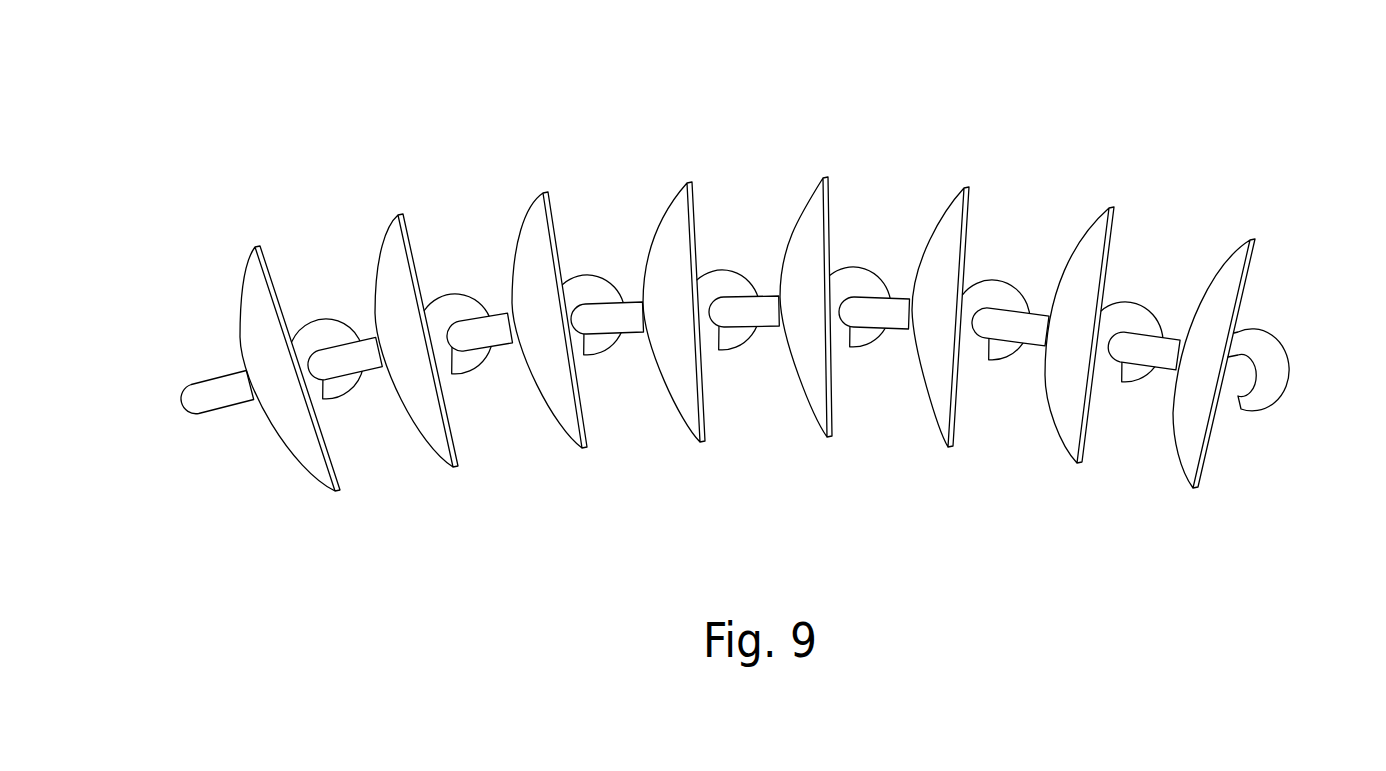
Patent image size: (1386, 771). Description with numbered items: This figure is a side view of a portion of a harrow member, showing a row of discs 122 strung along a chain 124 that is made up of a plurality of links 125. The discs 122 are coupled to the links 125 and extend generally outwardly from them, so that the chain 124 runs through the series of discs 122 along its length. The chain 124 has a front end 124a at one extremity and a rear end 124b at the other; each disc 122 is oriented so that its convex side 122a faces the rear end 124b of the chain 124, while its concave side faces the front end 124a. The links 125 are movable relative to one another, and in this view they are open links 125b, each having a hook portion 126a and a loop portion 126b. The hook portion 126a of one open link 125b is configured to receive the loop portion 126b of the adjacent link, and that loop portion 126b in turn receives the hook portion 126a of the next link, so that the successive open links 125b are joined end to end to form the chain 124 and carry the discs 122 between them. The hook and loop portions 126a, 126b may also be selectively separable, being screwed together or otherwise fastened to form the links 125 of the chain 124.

The disc 122 is at (657, 202).
The convex side 122a is at (530, 227).
The chain 124 is at (747, 257).
The front end 124a is at (182, 373).
The rear end 124b is at (1283, 413).
The link 125 is at (1008, 267).
The open link 125b is at (483, 378).
The hook portion 126a is at (1135, 315).
The loop portion 126b is at (1145, 353).